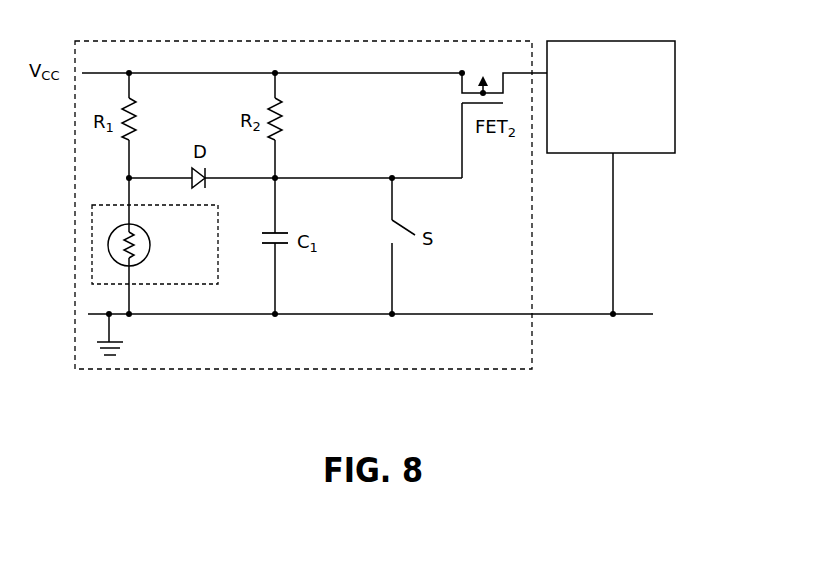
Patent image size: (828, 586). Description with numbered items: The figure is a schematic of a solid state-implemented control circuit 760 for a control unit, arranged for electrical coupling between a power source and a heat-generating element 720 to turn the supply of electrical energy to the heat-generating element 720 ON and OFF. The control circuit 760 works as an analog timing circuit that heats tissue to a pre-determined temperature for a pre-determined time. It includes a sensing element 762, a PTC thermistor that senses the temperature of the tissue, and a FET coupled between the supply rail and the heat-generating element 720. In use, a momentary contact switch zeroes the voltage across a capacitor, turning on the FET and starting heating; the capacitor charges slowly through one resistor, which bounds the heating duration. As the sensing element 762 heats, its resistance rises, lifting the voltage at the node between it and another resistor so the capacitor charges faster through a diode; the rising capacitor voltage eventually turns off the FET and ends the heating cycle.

The heat-generating element 720 is at (648, 41).
The control circuit 760 is at (148, 369).
The sensing element 762 is at (107, 205).